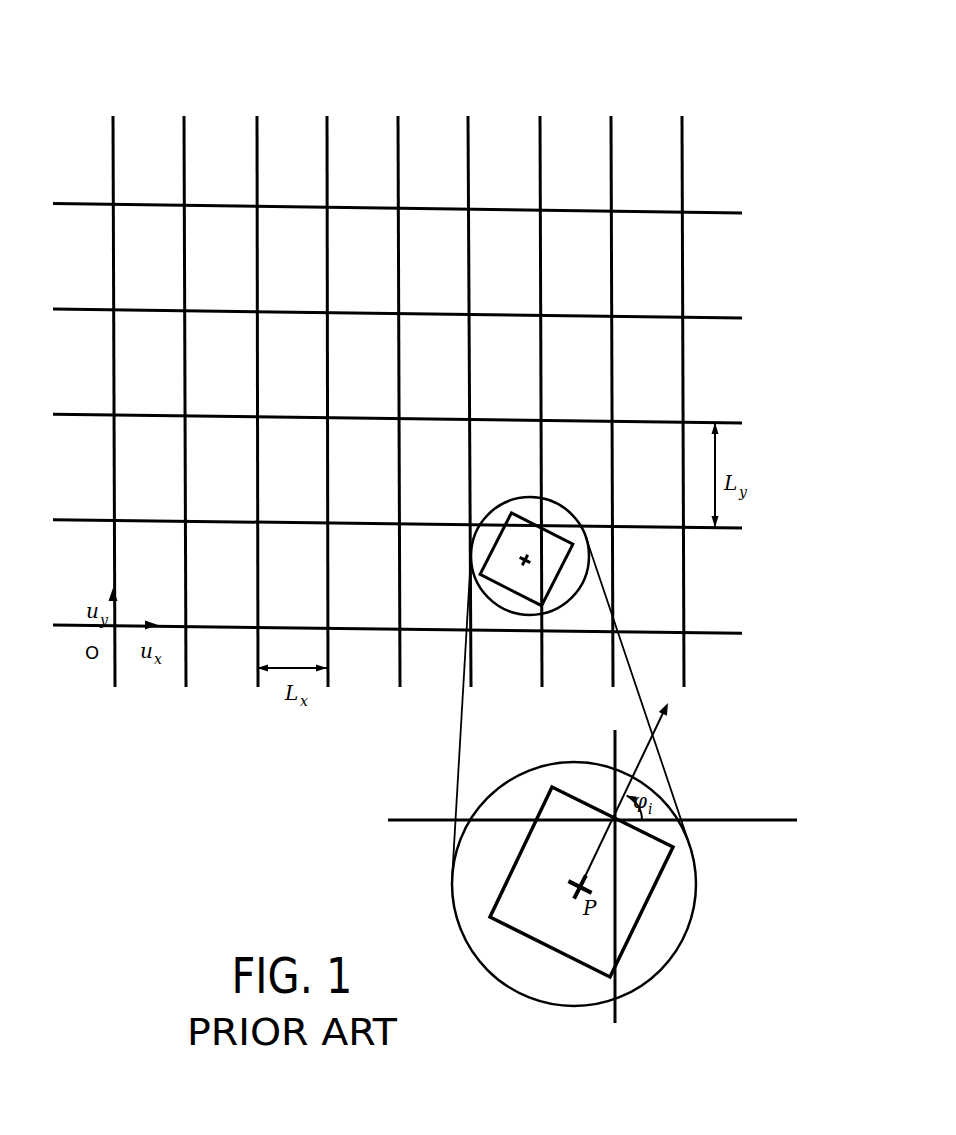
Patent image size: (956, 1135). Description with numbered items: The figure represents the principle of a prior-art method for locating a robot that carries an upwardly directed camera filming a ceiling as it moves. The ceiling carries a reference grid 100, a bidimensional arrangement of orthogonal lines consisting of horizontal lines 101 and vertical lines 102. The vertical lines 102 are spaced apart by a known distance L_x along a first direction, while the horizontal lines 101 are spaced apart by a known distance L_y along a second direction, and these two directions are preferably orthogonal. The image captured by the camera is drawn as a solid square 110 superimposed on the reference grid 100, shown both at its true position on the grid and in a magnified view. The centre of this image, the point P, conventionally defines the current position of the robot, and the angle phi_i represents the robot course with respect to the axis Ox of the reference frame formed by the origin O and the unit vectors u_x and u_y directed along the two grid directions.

The reference grid 100 is at (504, 93).
The horizontal lines 101 is at (713, 633).
The vertical lines 102 is at (682, 177).
The solid square 110 is at (628, 942).